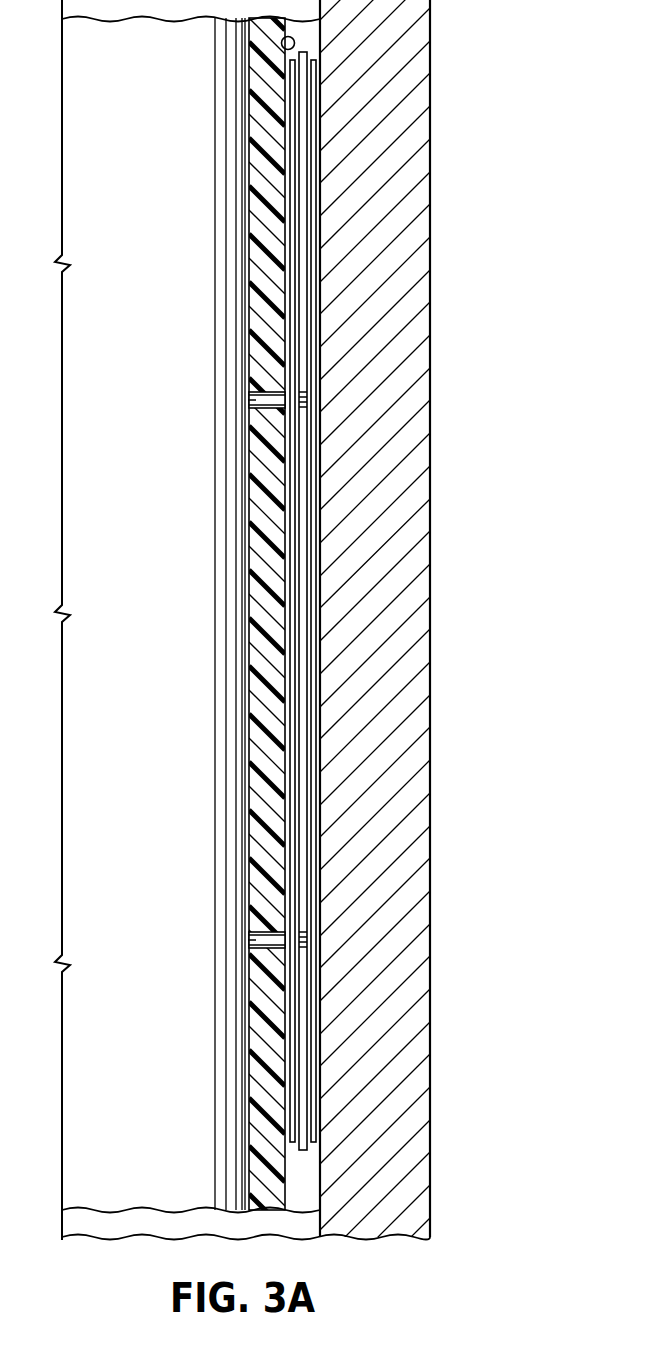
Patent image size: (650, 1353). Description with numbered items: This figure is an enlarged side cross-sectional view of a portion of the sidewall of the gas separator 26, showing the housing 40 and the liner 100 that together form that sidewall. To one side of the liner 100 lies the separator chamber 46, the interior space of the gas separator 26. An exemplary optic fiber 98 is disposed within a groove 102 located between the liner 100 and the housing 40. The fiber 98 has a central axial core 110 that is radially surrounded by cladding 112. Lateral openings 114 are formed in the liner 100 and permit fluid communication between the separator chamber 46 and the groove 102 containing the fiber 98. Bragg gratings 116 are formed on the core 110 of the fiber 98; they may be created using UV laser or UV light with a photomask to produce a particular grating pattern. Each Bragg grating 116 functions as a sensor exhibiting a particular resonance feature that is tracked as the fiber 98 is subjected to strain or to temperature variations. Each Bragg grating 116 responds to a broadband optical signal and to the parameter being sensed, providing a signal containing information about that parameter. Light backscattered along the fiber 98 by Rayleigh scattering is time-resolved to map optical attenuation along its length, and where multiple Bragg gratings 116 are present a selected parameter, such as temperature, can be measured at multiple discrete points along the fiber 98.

The gas separator 26 is at (445, 500).
The housing 40 is at (432, 670).
The separator chamber 46 is at (141, 598).
The optic fiber 98 is at (294, 137).
The liner 100 is at (262, 725).
The groove 102 is at (281, 43).
The central axial core 110 is at (302, 215).
The cladding 112 is at (293, 290).
The lateral openings 114 is at (252, 400).
The Bragg gratings 116 is at (300, 412).